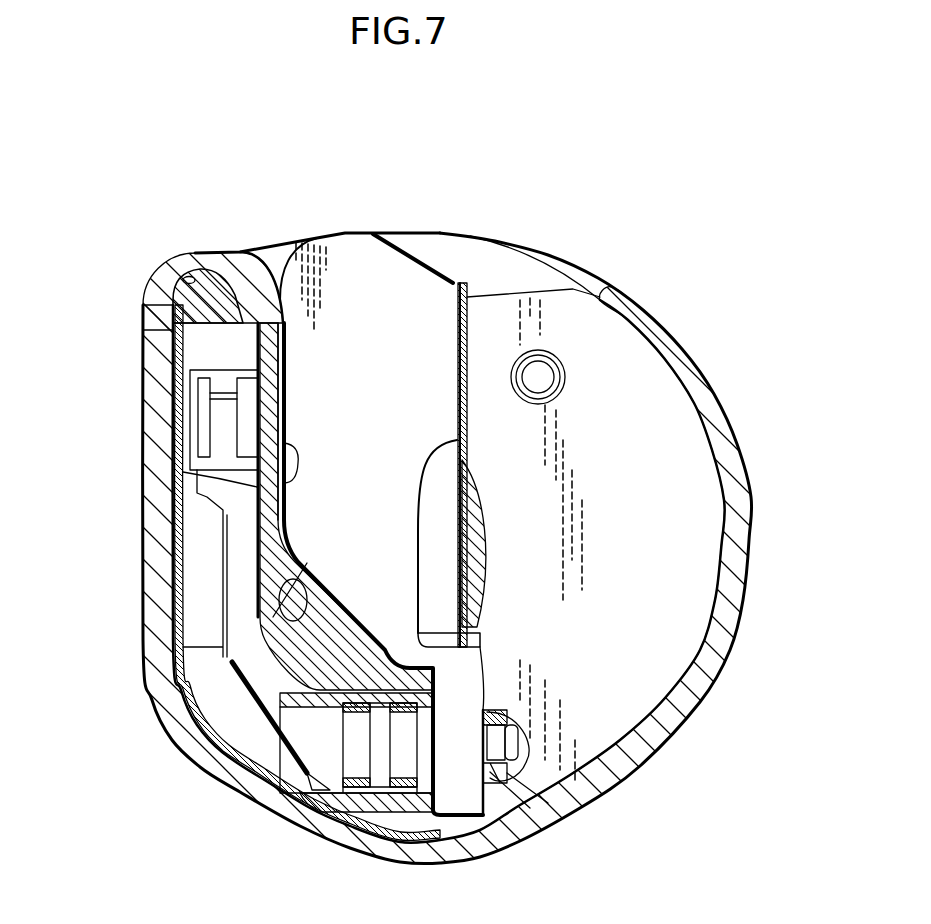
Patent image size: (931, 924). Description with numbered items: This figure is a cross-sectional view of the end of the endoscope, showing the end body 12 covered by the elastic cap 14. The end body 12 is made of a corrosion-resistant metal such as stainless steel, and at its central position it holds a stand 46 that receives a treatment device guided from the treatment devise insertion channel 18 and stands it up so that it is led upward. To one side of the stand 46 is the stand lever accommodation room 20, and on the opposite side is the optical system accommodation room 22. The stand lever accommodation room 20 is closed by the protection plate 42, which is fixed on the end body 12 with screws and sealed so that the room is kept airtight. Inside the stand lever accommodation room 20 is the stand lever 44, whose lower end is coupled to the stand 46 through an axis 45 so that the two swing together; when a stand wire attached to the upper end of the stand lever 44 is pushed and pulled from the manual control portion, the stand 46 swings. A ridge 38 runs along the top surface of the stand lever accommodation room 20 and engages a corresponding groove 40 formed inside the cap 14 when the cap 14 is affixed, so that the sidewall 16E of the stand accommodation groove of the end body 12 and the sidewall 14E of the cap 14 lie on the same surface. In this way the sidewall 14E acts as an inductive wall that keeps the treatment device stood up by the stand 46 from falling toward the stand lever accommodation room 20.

The end body 12 is at (175, 340).
The cap 14 is at (300, 817).
The sidewall of the cap 14E is at (278, 300).
The sidewall of the stand accommodation groove 16E is at (178, 470).
The treatment devise insertion channel 18 is at (190, 630).
The stand lever accommodation room 20 is at (188, 546).
The optical system accommodation room 22 is at (660, 435).
The ridge 38 is at (202, 270).
The groove 40 is at (167, 270).
The protection plate 42 is at (173, 587).
The stand lever 44 is at (243, 672).
The axis 45 is at (497, 767).
The stand 46 is at (393, 275).